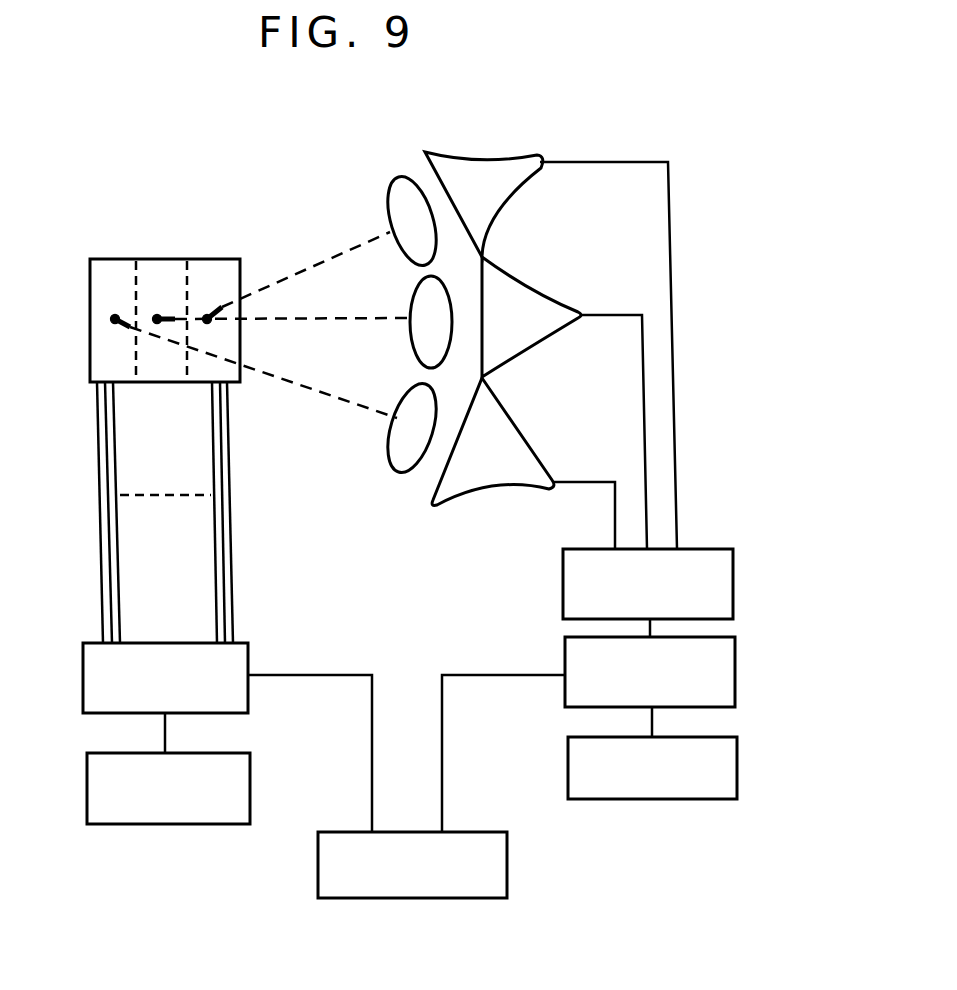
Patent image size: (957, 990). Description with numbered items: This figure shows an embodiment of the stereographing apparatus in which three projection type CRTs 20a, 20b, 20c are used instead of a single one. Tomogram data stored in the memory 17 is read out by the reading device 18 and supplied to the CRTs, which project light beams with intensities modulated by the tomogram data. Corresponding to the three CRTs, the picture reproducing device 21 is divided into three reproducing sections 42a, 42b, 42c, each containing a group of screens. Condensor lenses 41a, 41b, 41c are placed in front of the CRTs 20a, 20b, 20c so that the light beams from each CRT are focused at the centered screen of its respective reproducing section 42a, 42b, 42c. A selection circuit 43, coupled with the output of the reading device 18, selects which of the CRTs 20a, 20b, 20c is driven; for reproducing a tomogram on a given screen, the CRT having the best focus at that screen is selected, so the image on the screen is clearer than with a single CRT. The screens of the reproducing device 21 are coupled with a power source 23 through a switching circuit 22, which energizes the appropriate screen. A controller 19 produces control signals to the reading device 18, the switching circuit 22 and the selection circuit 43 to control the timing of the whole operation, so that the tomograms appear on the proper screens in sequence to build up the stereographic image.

The picture reproducing device 21 is at (123, 250).
The reproducing section 42a is at (208, 260).
The reproducing section 42b is at (155, 260).
The reproducing section 42c is at (105, 260).
The condensor lens 41a is at (396, 178).
The condensor lens 41b is at (414, 342).
The condensor lens 41c is at (401, 463).
The projection type CRT 20a is at (473, 158).
The projection type CRT 20b is at (520, 293).
The projection type CRT 20c is at (519, 440).
The selection circuit 43 is at (735, 594).
The reading device 18 is at (737, 691).
The memory 17 is at (739, 774).
The controller 19 is at (509, 864).
The switching circuit 22 is at (83, 698).
The power source 23 is at (87, 792).